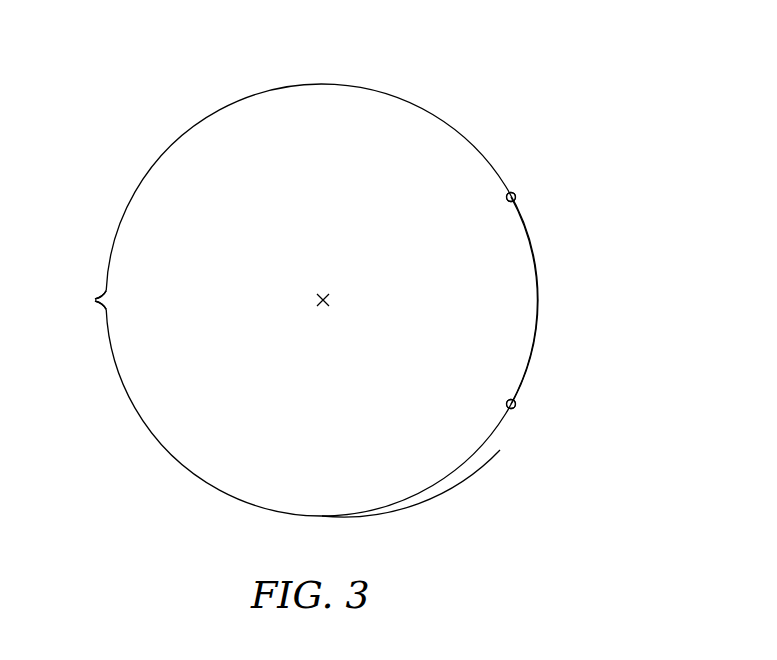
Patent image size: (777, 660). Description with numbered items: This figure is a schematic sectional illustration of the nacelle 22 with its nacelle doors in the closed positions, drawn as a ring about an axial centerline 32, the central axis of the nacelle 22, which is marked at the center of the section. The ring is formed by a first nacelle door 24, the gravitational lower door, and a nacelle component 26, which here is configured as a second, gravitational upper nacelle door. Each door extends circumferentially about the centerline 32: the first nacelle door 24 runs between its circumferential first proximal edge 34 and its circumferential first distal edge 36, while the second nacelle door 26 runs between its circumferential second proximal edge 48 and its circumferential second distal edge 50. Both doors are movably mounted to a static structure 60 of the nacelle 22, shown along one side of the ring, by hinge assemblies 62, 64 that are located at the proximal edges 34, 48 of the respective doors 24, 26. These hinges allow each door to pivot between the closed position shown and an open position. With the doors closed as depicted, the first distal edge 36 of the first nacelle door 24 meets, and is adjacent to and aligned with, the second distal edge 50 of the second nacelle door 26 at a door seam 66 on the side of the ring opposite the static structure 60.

The nacelle 22 is at (535, 72).
The first nacelle door 24 is at (447, 477).
The nacelle component 26 is at (422, 108).
The axial centerline 32 is at (322, 309).
The first proximal edge 34 is at (515, 409).
The first distal edge 36 is at (95, 299).
The second proximal edge 48 is at (514, 192).
The second distal edge 50 is at (95, 301).
The static structure 60 is at (539, 263).
The hinge assembly 62 is at (520, 403).
The hinge assembly 64 is at (520, 195).
The door seam 66 is at (113, 300).